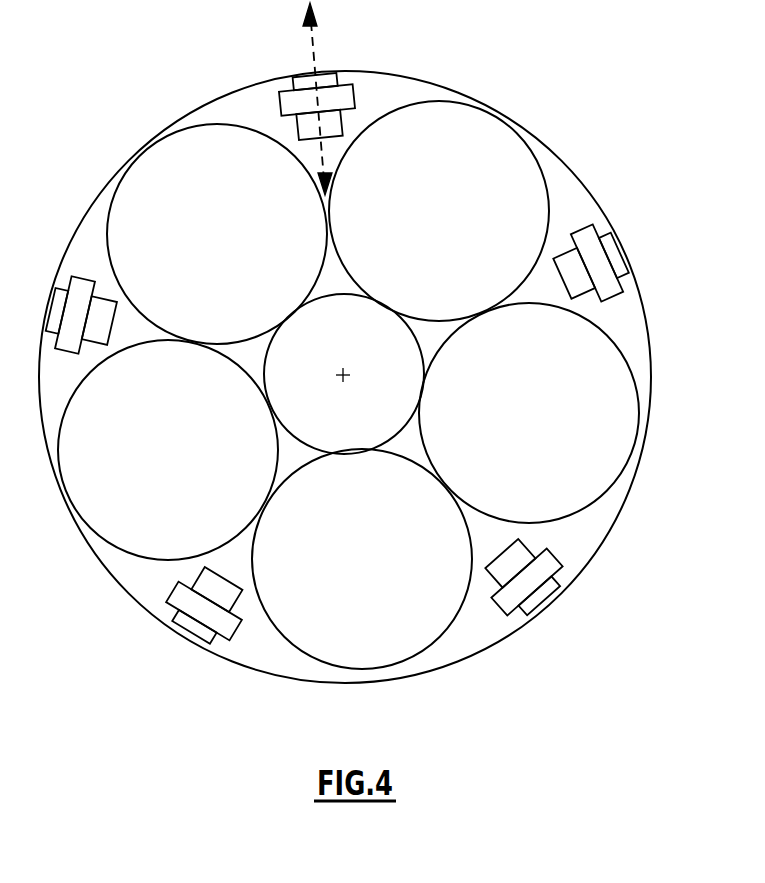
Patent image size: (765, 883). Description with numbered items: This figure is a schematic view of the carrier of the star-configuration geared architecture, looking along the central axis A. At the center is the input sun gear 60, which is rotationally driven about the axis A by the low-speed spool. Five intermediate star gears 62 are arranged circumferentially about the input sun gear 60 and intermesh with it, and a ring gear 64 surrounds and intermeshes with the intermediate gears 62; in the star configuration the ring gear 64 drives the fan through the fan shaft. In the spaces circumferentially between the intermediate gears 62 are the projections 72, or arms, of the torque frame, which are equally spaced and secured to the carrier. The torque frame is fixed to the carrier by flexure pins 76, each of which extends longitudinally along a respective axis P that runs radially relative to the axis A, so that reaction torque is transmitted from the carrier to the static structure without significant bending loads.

The input sun gear 60 is at (379, 355).
The intermediate star gears 62 is at (468, 234).
The ring gear 64 is at (626, 507).
The projections 72 is at (348, 101).
The flexure pin 76 is at (615, 262).
The axis A is at (347, 379).
The axis P is at (313, 34).